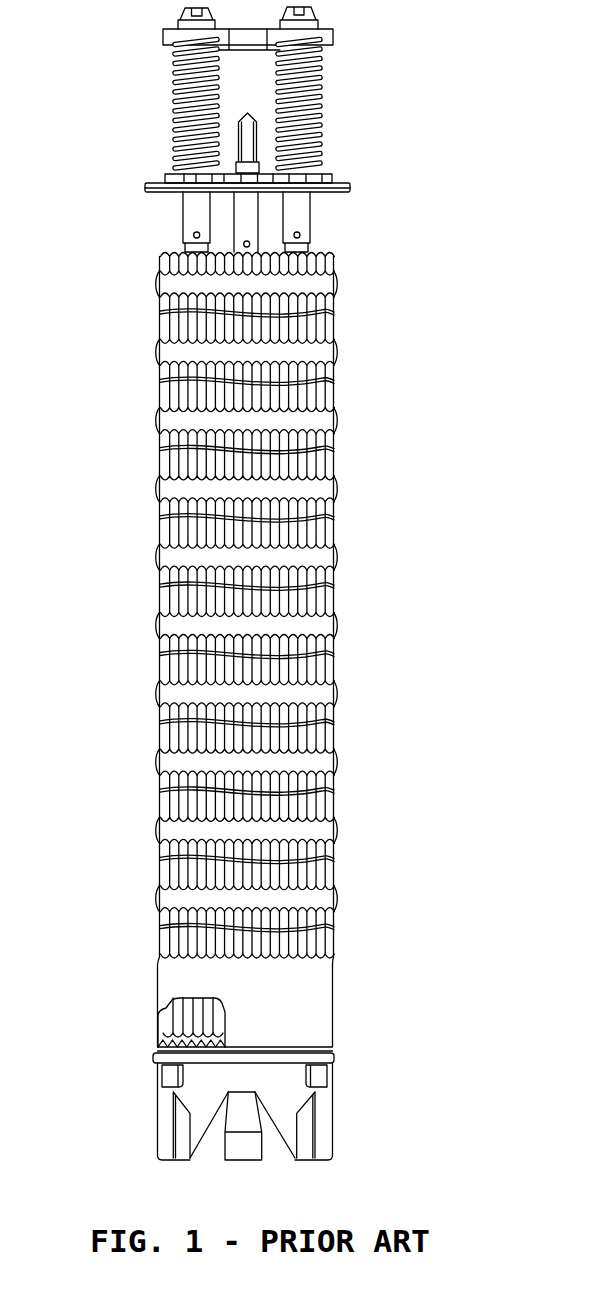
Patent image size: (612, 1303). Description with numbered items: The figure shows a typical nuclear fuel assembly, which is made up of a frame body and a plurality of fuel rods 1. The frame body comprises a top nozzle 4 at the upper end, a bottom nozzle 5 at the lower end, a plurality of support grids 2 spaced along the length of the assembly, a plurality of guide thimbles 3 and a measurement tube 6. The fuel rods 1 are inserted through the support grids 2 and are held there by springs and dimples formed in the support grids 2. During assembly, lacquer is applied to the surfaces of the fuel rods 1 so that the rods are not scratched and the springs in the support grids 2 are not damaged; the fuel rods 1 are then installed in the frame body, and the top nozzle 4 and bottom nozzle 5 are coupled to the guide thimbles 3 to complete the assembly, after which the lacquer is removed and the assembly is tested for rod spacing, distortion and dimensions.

The fuel rod 1 is at (325, 600).
The support grid 2 is at (322, 422).
The guide thimble 3 is at (307, 232).
The top nozzle 4 is at (320, 113).
The bottom nozzle 5 is at (322, 1115).
The measurement tube 6 is at (250, 218).